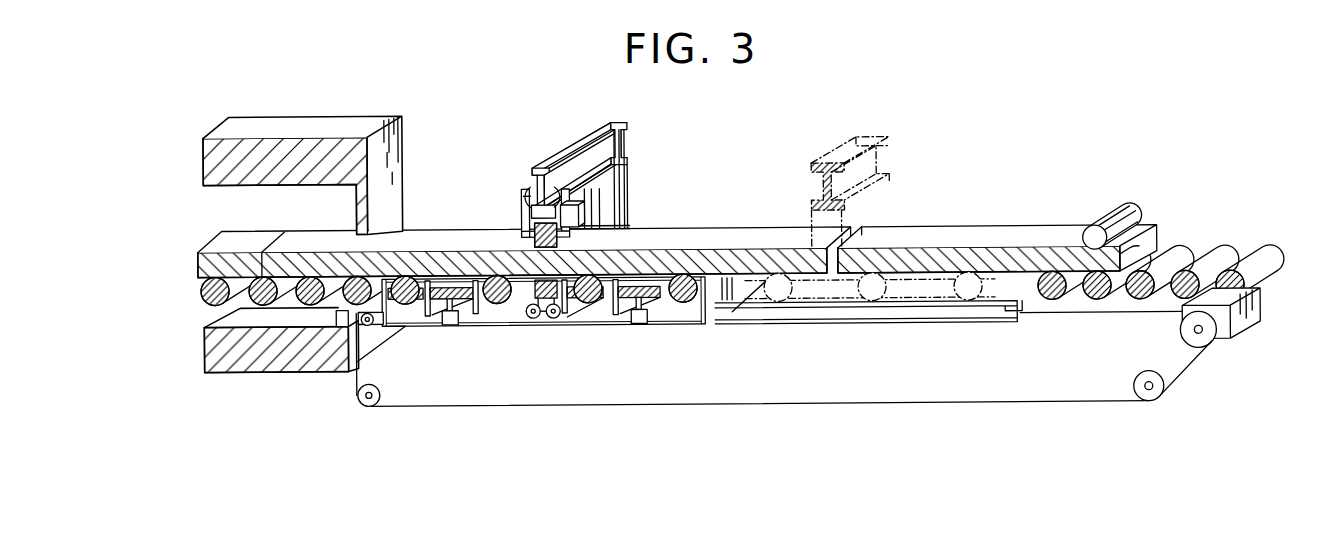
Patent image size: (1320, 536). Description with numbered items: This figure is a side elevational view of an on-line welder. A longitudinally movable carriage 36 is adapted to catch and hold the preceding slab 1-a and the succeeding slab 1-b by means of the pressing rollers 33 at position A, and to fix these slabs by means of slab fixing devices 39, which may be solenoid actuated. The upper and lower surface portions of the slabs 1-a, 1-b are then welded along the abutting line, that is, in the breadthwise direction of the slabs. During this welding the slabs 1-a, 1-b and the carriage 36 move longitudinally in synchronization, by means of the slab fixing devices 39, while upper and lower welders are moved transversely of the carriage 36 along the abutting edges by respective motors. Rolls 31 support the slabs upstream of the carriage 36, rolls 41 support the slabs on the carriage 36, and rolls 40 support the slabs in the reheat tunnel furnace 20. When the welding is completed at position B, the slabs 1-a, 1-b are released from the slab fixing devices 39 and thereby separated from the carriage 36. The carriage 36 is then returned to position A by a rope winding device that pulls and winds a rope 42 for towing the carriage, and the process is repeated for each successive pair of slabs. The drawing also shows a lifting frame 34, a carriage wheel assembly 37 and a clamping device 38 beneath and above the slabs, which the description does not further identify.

The reheat tunnel furnace 20 is at (288, 135).
The preceding slab 1-a is at (498, 251).
The succeeding slab 1-b is at (684, 250).
The rolls 31 is at (1053, 301).
The pressing rollers 33 is at (1103, 224).
The lifting frame 34 is at (841, 309).
The longitudinally movable carriage 36 is at (478, 326).
The carriage 37 is at (565, 298).
The clamping device 38 is at (526, 232).
The slab fixing device 39 is at (437, 280).
The rolls 40 is at (305, 303).
The rolls 41 is at (684, 303).
The rope 42 is at (1123, 316).
The position A is at (822, 130).
The position B is at (540, 130).